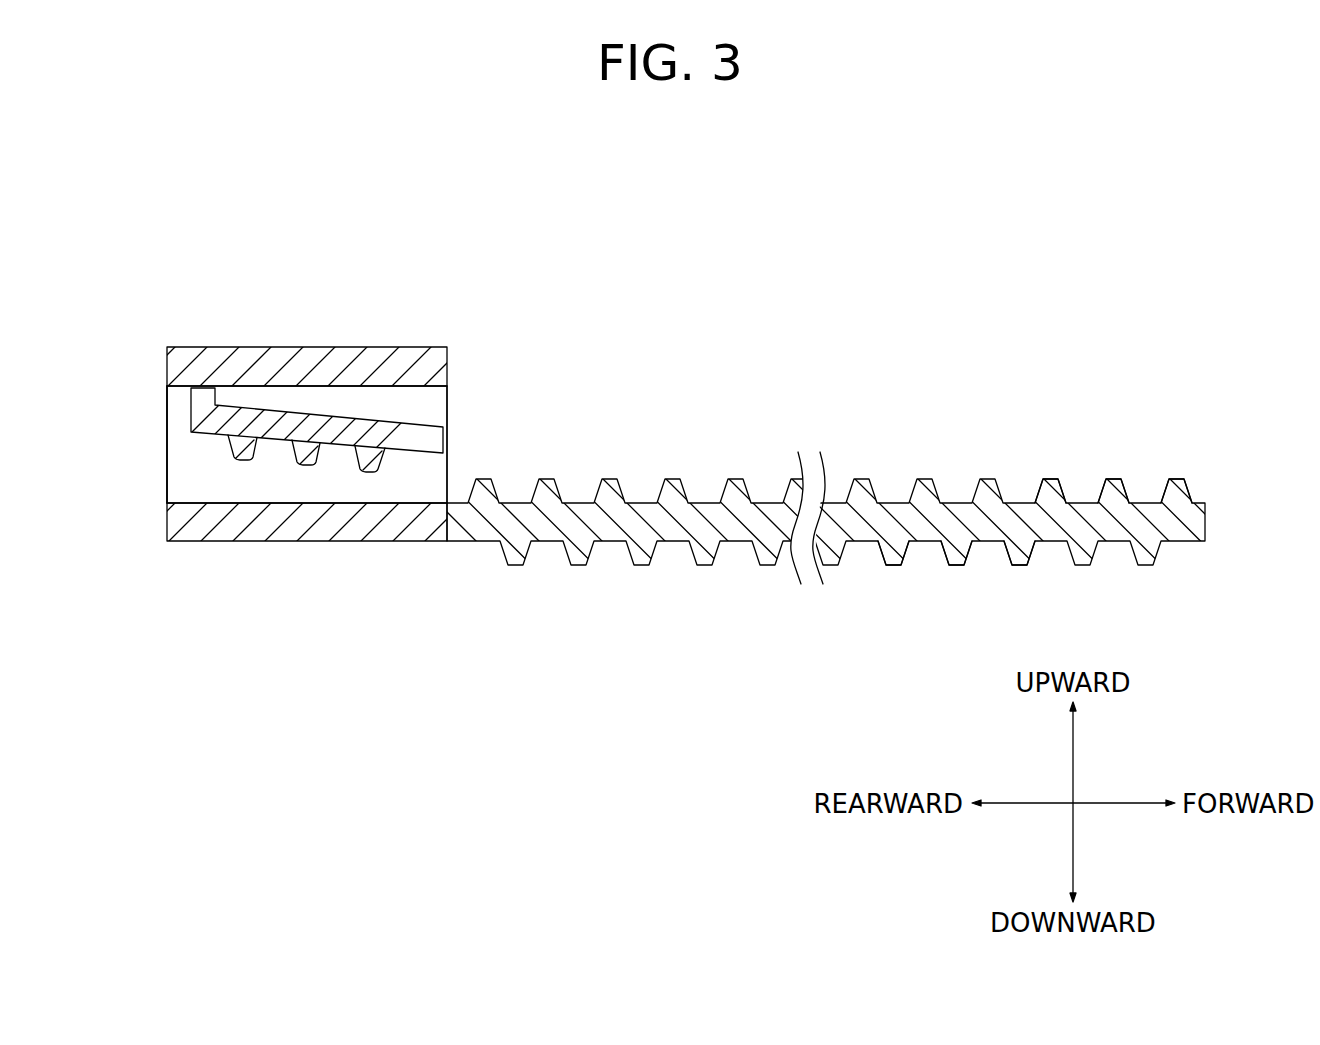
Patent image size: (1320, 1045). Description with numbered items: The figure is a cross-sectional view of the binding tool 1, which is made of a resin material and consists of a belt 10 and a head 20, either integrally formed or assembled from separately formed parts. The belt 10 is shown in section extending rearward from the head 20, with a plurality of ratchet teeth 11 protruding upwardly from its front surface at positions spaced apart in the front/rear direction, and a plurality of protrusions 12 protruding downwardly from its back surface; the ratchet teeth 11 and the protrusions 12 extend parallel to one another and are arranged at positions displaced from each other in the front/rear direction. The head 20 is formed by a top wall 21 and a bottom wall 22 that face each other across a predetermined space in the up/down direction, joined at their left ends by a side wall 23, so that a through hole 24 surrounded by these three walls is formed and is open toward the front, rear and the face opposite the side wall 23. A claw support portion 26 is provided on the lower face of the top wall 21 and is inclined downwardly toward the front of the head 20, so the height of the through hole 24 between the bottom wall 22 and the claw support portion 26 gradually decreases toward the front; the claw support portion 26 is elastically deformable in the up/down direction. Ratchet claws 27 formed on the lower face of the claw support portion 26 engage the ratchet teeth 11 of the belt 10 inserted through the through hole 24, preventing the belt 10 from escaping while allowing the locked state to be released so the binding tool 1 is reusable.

The binding tool 1 is at (741, 230).
The belt 10 is at (958, 402).
The ratchet teeth 11 is at (1192, 503).
The protrusions 12 is at (900, 566).
The head 20 is at (367, 278).
The top wall 21 is at (199, 347).
The bottom wall 22 is at (220, 542).
The side wall 23 is at (177, 450).
The through hole 24 is at (254, 496).
The claw support portion 26 is at (427, 435).
The ratchet claws 27 is at (370, 468).